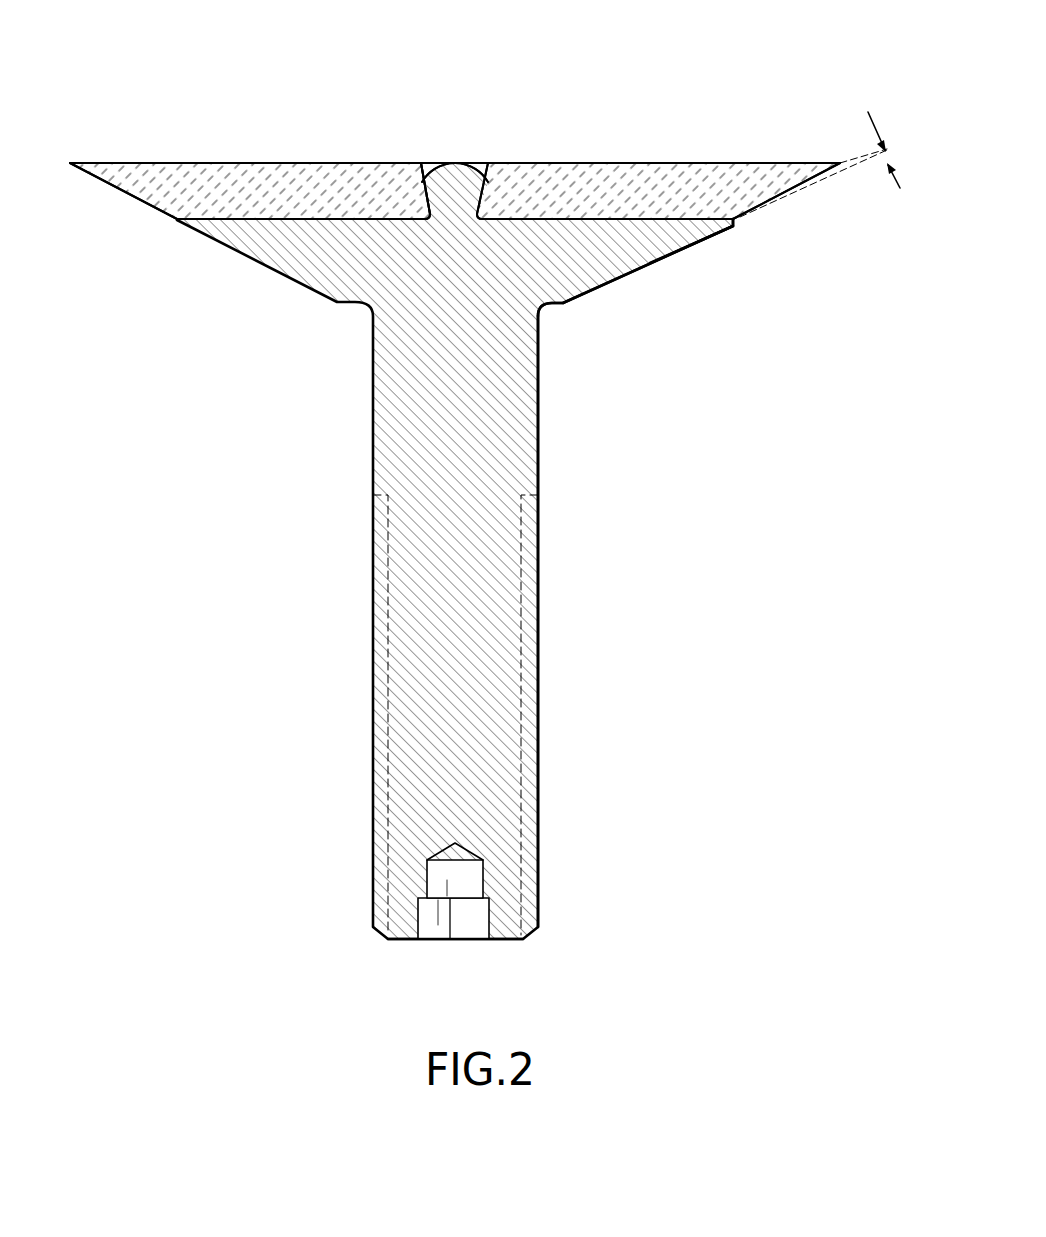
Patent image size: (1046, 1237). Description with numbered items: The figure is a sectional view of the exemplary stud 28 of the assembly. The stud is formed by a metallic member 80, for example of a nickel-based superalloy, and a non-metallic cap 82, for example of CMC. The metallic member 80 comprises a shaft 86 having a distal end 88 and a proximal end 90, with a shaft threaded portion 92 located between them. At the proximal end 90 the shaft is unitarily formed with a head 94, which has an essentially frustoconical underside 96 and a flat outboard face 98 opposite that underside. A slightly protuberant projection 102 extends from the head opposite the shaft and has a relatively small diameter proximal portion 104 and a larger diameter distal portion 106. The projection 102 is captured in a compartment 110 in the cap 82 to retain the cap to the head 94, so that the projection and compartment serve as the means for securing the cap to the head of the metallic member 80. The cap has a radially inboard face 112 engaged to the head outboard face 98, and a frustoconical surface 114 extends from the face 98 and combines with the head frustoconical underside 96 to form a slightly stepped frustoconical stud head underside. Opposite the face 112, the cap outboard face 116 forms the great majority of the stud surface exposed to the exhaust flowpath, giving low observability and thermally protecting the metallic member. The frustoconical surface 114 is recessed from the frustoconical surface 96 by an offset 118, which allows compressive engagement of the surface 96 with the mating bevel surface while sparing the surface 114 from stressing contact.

The stud 28 is at (713, 123).
The metallic member 80 is at (490, 398).
The non-metallic cap 82 is at (752, 165).
The shaft 86 is at (508, 572).
The distal end 88 is at (507, 942).
The proximal end 90 is at (520, 295).
The shaft threaded portion 92 is at (537, 678).
The head 94 is at (650, 240).
The frustoconical underside 96 is at (630, 273).
The flat outboard face 98 is at (613, 220).
The projection 102 is at (452, 156).
The proximal portion 104 is at (450, 212).
The distal portion 106 is at (435, 185).
The compartment 110 is at (478, 163).
The radially inboard face 112 is at (690, 220).
The frustoconical surface 114 is at (142, 202).
The cap outboard face 116 is at (187, 162).
The offset 118 is at (893, 147).